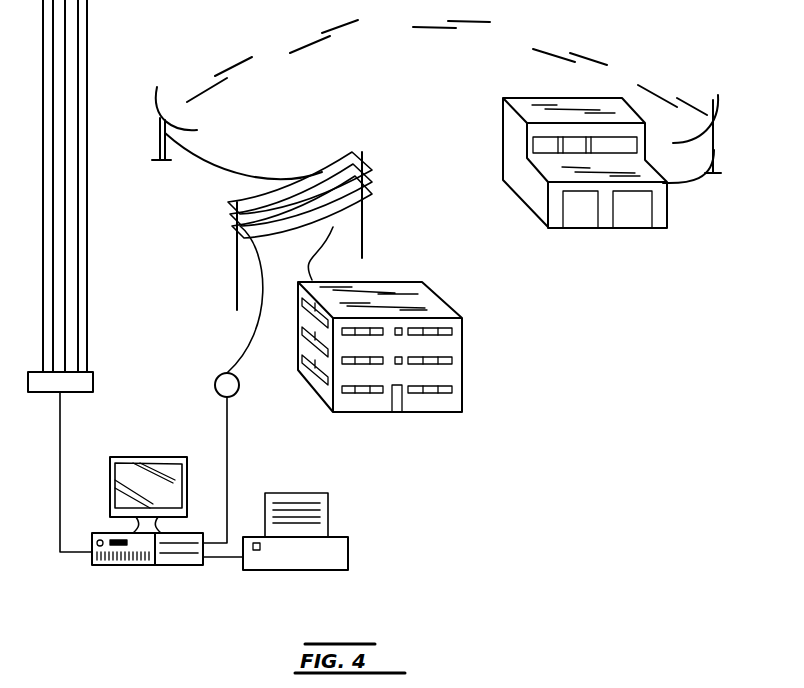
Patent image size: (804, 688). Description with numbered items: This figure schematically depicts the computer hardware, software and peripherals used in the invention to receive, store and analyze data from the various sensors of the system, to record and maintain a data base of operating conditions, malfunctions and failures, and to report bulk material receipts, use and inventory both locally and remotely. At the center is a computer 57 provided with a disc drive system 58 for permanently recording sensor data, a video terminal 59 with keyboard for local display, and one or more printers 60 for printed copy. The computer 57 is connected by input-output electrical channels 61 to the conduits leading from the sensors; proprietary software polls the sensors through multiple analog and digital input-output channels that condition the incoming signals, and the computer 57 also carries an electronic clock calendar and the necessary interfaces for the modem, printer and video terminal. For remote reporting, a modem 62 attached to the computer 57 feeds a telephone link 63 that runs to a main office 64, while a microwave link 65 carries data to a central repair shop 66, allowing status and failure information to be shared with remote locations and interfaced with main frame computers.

The computer 57 is at (118, 567).
The disc drive system 58 is at (182, 568).
The video terminal 59 is at (138, 457).
The printer 60 is at (332, 537).
The input-output electrical channels 61 is at (101, 35).
The modem 62 is at (218, 377).
The telephone link 63 is at (230, 214).
The main office 64 is at (440, 297).
The microwave link 65 is at (560, 55).
The central repair shop 66 is at (503, 145).